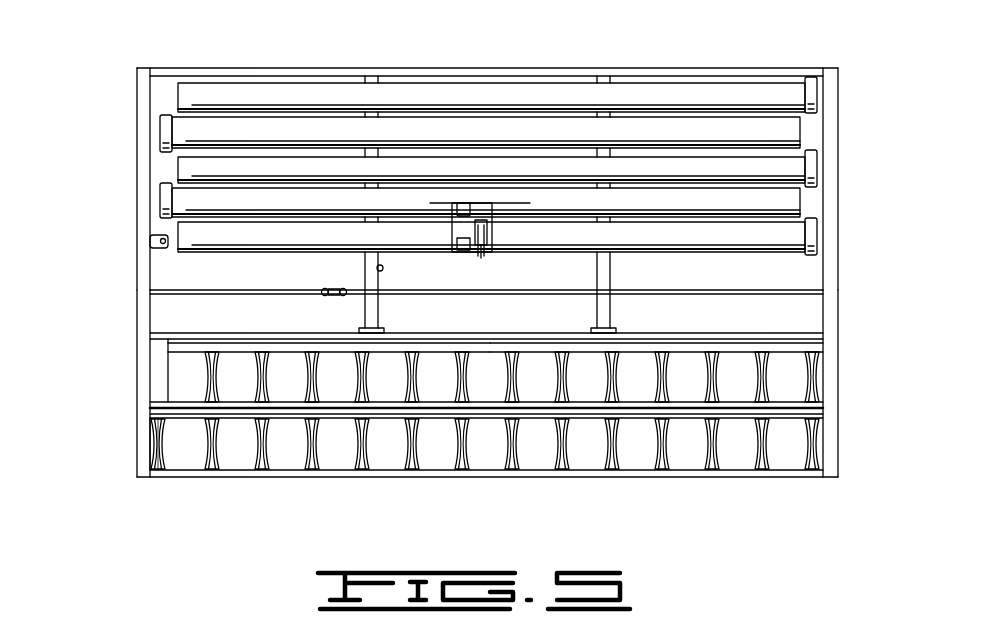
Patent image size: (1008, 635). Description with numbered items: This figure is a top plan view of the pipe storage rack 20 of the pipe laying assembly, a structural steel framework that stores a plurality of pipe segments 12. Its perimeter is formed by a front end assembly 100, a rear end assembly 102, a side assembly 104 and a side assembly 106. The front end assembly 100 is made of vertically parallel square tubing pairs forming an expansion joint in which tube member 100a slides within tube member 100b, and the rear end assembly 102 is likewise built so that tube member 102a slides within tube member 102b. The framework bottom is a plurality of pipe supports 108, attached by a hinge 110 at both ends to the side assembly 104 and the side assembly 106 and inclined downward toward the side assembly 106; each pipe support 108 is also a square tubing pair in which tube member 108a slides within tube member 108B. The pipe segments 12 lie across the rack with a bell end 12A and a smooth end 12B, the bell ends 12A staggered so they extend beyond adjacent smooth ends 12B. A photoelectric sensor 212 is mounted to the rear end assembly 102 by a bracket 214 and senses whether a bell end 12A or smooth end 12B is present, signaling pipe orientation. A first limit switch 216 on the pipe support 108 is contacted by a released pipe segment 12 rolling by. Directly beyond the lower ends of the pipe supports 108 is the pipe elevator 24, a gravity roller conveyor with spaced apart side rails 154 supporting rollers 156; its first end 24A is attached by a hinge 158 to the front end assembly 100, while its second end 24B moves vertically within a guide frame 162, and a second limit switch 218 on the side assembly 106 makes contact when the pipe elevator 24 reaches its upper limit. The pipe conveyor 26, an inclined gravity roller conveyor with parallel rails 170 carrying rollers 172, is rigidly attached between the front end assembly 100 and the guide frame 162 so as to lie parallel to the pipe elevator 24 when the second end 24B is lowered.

The pipe storage rack 20 is at (712, 66).
The pipe segments 12 is at (298, 95).
The bell end 12A is at (812, 93).
The smooth end 12B is at (200, 95).
The side assembly 104 is at (427, 68).
The tube member 108B is at (602, 115).
The front end assembly 100 is at (838, 228).
The tube member 100a is at (830, 348).
The tube member 100b is at (838, 143).
The rear end assembly 102 is at (137, 235).
The tube member 102a is at (142, 330).
The tube member 102b is at (140, 143).
The bracket 214 is at (160, 243).
The photoelectric sensor 212 is at (168, 248).
The first limit switch 216 is at (384, 268).
The second limit switch 218 is at (193, 335).
The pipe supports 108 is at (365, 318).
The tube member 108a is at (597, 318).
The hinge 110 is at (615, 330).
The side assembly 106 is at (433, 333).
The pipe elevator 24 is at (784, 378).
The first end 24A is at (805, 350).
The second end 24B is at (185, 352).
The guide frame 162 is at (158, 400).
The hinge 158 is at (820, 405).
The rollers 156 is at (364, 386).
The side rails 154 is at (284, 354).
The rails 170 is at (490, 478).
The pipe conveyor 26 is at (638, 452).
The rollers 172 is at (563, 434).